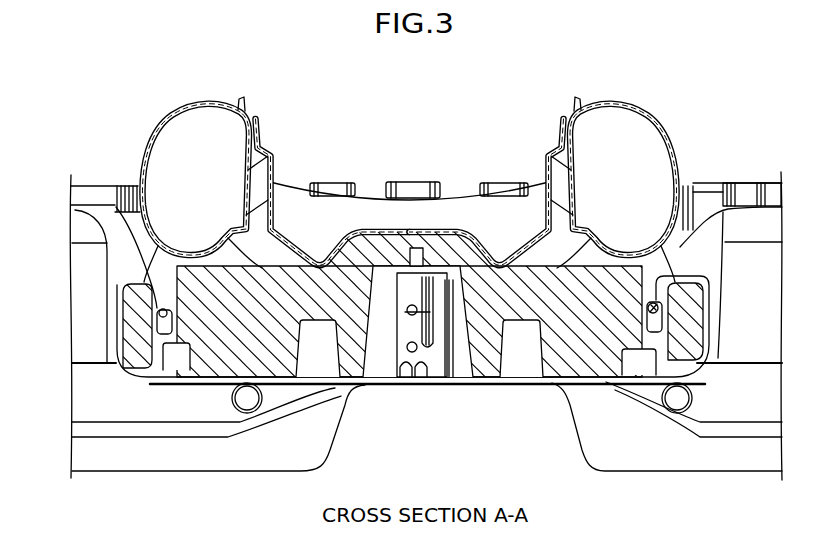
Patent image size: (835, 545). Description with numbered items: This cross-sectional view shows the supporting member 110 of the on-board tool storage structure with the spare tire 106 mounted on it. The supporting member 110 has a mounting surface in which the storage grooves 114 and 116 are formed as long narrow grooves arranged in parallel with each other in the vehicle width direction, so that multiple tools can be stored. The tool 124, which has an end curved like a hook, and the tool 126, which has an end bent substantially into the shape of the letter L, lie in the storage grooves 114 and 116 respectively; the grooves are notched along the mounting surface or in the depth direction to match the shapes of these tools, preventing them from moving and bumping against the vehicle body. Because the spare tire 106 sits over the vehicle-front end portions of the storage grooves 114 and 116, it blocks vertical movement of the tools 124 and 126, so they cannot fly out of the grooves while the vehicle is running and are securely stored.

The spare tire 106 is at (618, 104).
The storage groove 114 is at (106, 212).
The supporting member 110 is at (556, 383).
The storage groove 116 is at (708, 277).
The tool 124 is at (156, 333).
The tool 126 is at (660, 320).